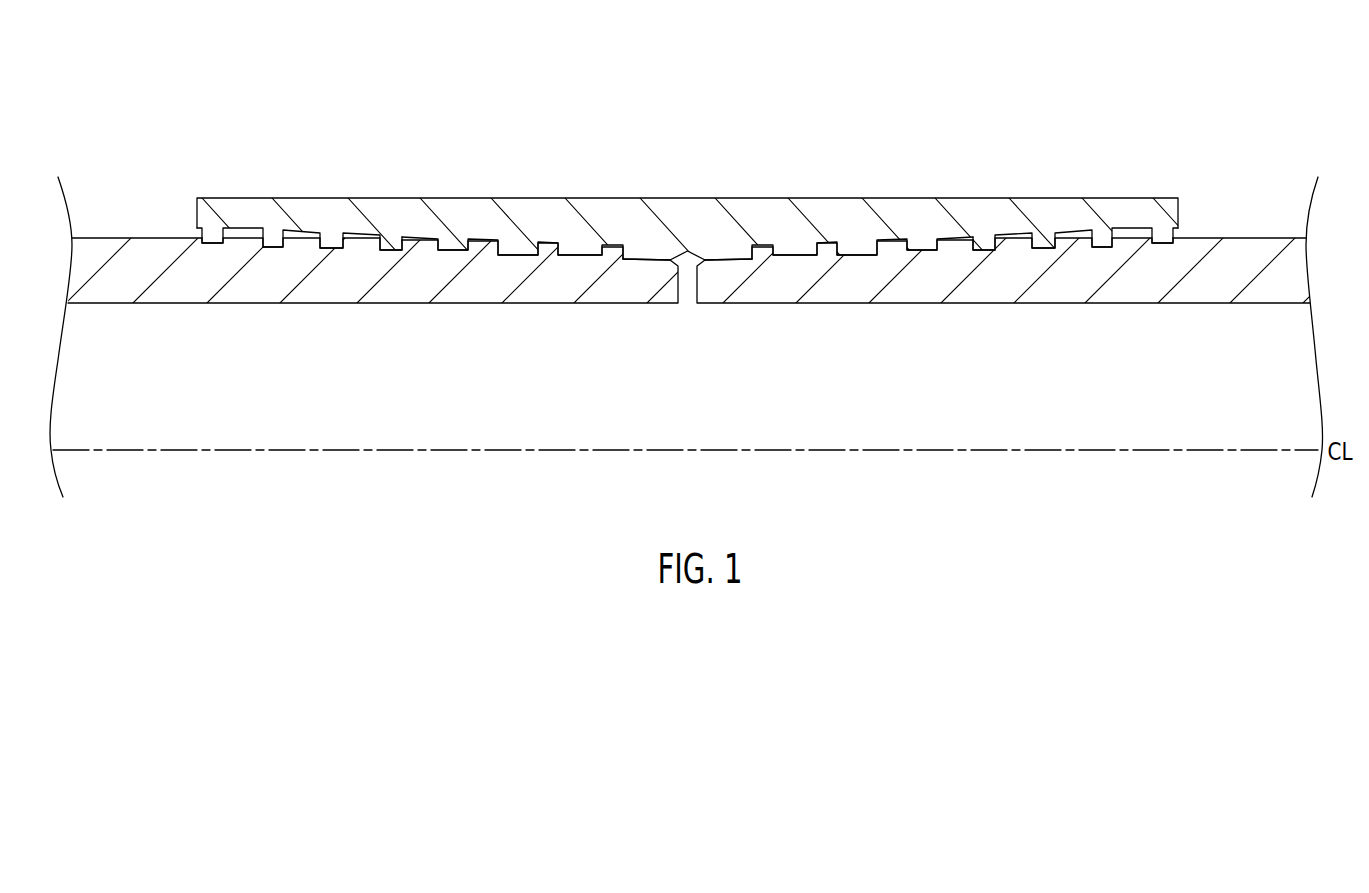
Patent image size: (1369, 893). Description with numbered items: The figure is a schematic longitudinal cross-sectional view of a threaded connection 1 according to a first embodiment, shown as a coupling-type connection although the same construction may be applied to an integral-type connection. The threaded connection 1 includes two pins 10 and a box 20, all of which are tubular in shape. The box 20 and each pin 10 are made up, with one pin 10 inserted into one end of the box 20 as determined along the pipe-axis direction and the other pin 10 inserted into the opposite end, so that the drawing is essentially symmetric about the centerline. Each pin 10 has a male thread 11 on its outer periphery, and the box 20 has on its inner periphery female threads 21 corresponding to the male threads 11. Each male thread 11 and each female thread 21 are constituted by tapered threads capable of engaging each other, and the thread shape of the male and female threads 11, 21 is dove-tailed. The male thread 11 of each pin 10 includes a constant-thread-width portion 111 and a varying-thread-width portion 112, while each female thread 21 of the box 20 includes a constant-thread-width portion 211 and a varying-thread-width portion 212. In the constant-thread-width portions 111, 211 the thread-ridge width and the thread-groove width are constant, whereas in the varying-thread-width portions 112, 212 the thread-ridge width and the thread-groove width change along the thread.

The threaded connection 1 is at (1296, 55).
The pin 10 is at (709, 321).
The male thread 11 is at (687, 330).
The constant-thread-width portion 111 is at (332, 254).
The varying-thread-width portion 112 is at (687, 302).
The box 20 is at (705, 165).
The female thread 21 is at (687, 163).
The constant-thread-width portion 211 is at (352, 227).
The varying-thread-width portion 212 is at (687, 194).